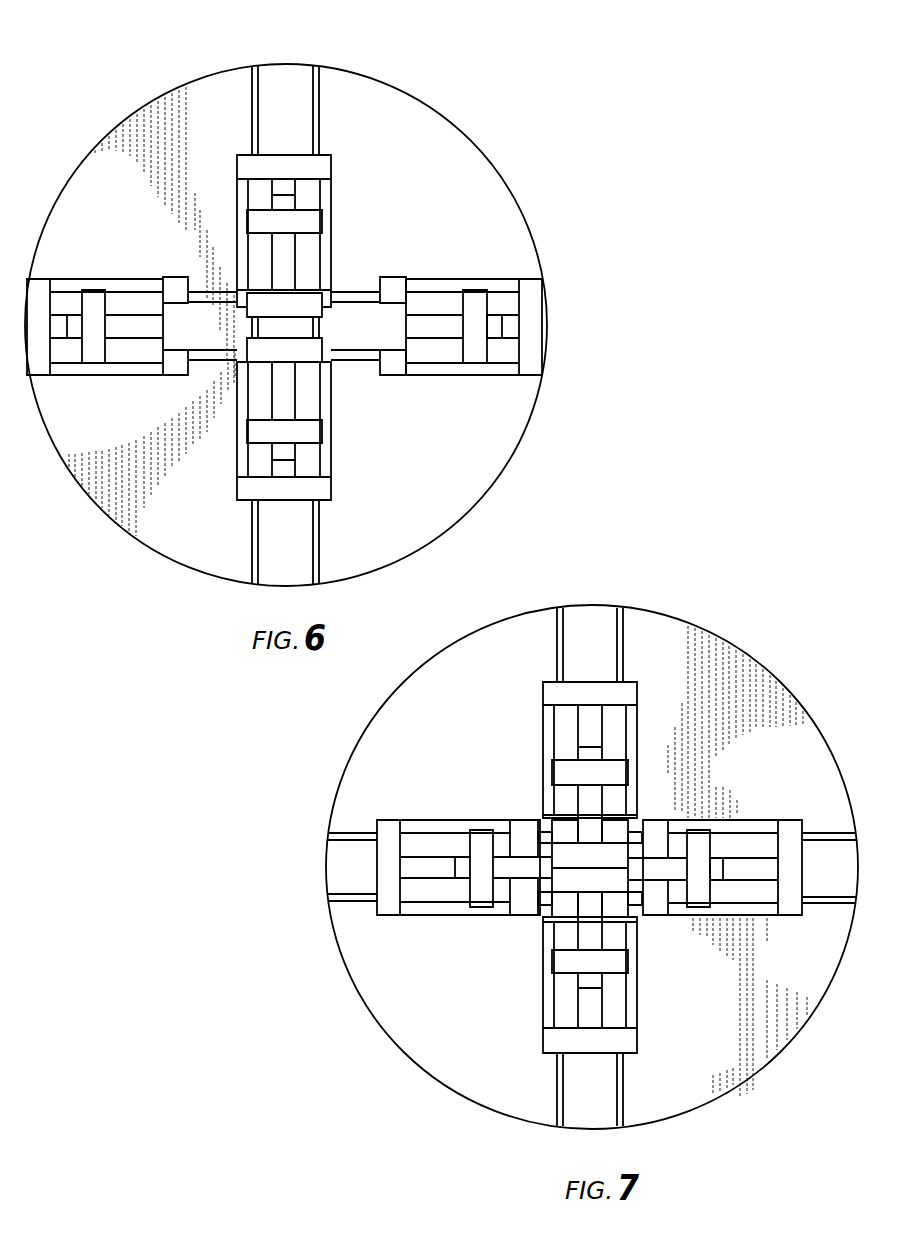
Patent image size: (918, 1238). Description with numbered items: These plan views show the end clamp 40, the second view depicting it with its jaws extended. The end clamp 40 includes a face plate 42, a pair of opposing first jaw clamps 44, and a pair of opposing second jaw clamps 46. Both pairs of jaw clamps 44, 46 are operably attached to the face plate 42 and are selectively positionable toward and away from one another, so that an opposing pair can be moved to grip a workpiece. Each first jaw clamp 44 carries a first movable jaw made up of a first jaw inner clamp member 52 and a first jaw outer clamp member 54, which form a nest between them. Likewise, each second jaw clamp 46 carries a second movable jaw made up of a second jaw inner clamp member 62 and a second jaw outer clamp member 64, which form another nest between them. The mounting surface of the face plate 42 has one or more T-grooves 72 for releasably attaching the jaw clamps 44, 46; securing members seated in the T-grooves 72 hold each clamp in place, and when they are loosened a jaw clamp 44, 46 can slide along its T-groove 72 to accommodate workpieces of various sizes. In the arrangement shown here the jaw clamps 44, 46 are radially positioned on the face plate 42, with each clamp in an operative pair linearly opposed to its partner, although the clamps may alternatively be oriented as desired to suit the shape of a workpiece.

In FIG. 6, the end clamp 40 is at (331, 320).
In FIG. 7, the end clamp 40 is at (597, 840).
In FIG. 6, the face plate 42 is at (469, 139).
In FIG. 7, the face plate 42 is at (745, 662).
In FIG. 6, the first jaw clamps 44 is at (488, 376).
In FIG. 7, the first jaw clamps 44 is at (752, 917).
In FIG. 6, the second jaw clamps 46 is at (326, 432).
In FIG. 7, the second jaw clamps 46 is at (638, 1003).
In FIG. 6, the first jaw inner clamp member 52 is at (393, 376).
In FIG. 7, the first jaw inner clamp member 52 is at (618, 907).
In FIG. 6, the first jaw outer clamp member 54 is at (476, 348).
In FIG. 7, the first jaw outer clamp member 54 is at (699, 846).
In FIG. 6, the second jaw inner clamp member 62 is at (268, 345).
In FIG. 7, the second jaw inner clamp member 62 is at (565, 882).
In FIG. 6, the second jaw outer clamp member 64 is at (260, 433).
In FIG. 7, the second jaw outer clamp member 64 is at (560, 960).
In FIG. 6, the T-grooves 72 is at (362, 356).
In FIG. 7, the T-grooves 72 is at (558, 1100).